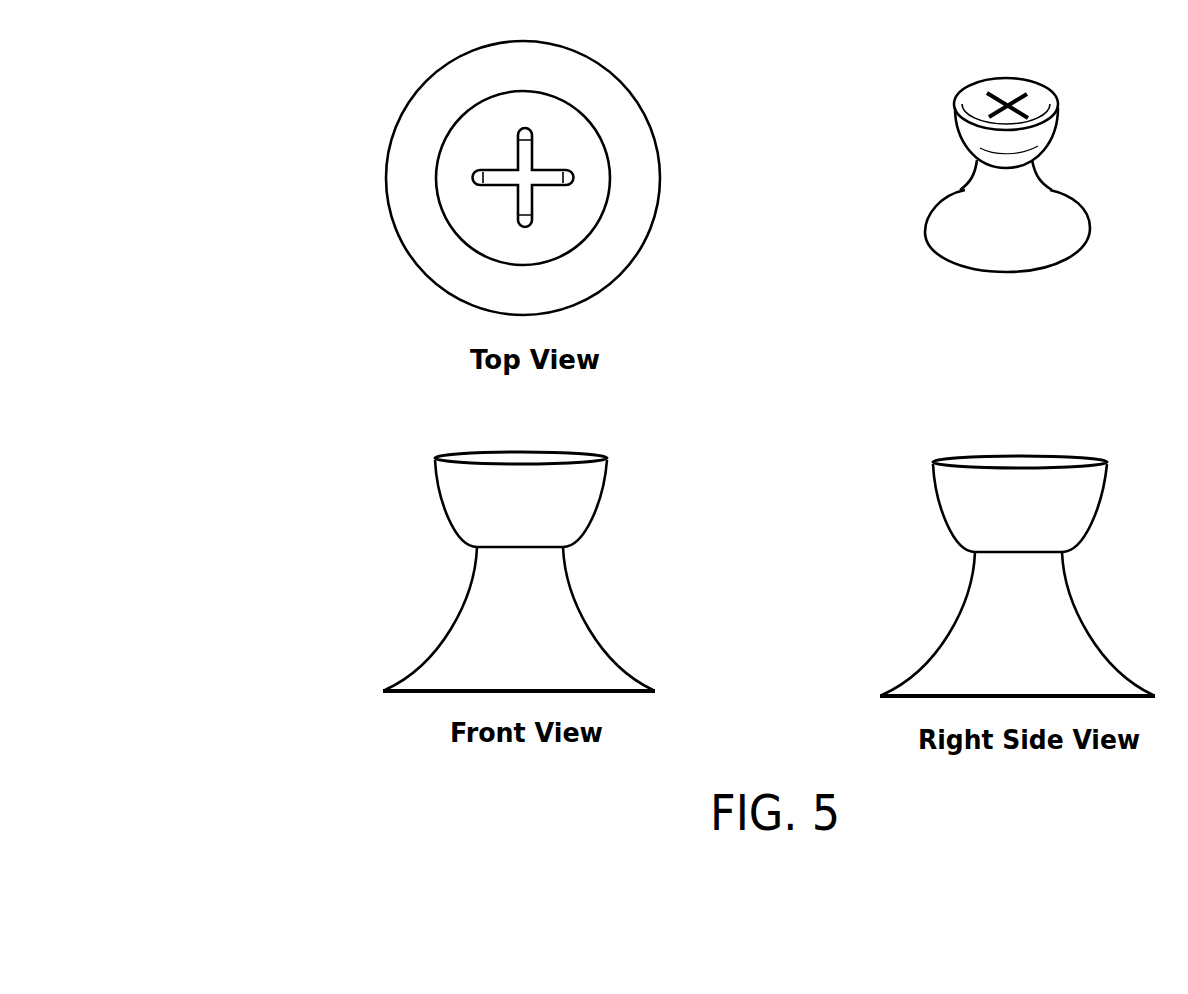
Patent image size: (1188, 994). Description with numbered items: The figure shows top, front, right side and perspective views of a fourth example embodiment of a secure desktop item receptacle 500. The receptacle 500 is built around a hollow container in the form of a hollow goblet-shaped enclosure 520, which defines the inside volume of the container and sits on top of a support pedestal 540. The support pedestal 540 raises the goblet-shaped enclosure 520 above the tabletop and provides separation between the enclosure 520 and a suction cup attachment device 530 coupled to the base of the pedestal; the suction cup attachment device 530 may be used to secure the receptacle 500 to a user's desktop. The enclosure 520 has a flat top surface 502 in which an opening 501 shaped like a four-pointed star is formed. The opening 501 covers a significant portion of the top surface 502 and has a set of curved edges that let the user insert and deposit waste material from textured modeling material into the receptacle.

The secure desktop item receptacle 500 is at (1057, 103).
The opening 501 is at (568, 175).
The flat top surface 502 is at (560, 450).
The hollow goblet-shaped enclosure 520 is at (555, 503).
The support pedestal 540 is at (580, 630).
The suction cup attachment device 530 is at (460, 690).